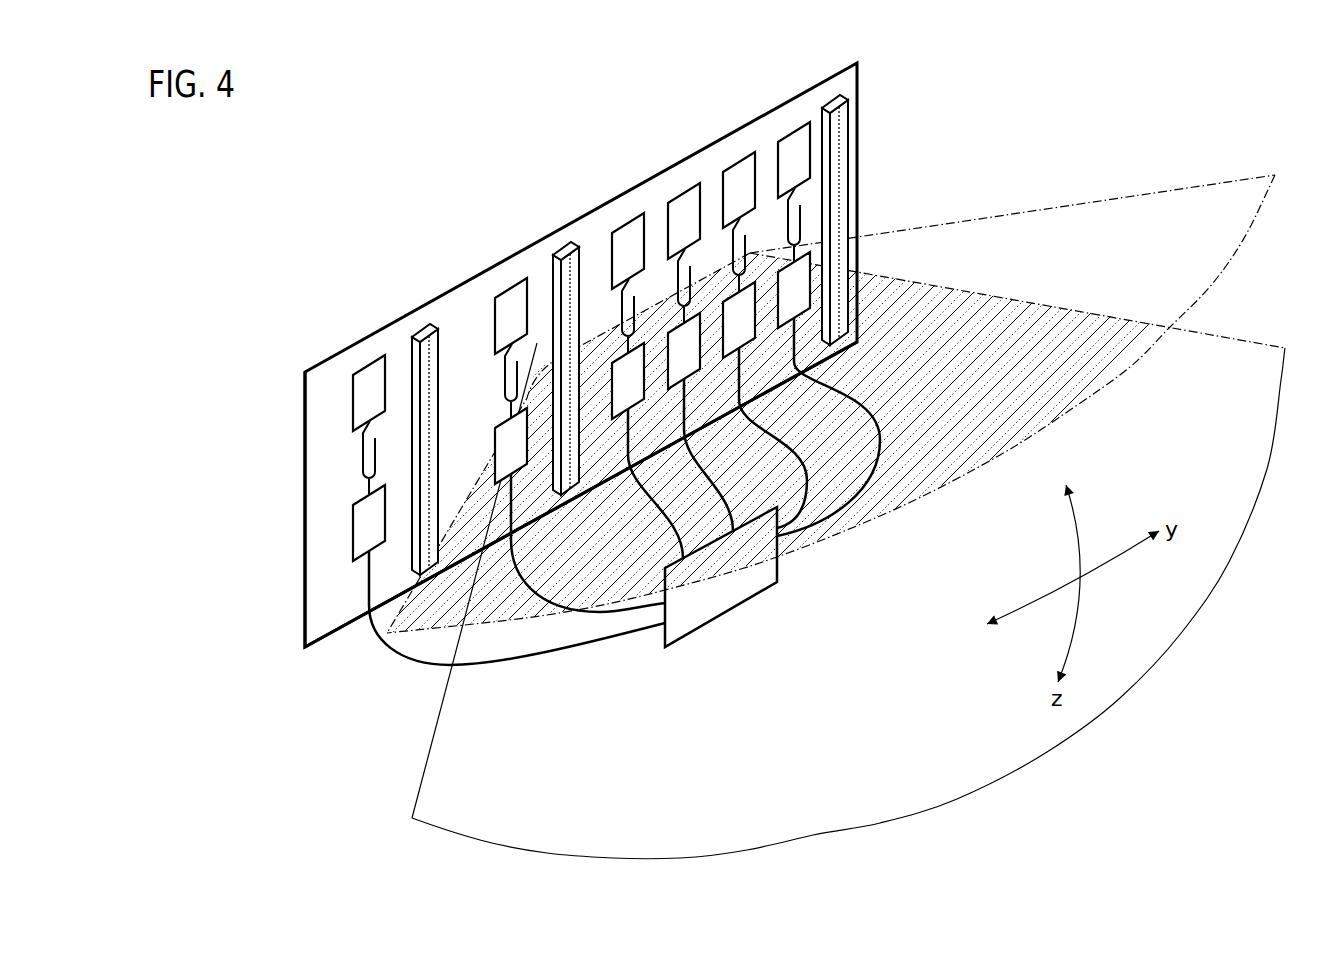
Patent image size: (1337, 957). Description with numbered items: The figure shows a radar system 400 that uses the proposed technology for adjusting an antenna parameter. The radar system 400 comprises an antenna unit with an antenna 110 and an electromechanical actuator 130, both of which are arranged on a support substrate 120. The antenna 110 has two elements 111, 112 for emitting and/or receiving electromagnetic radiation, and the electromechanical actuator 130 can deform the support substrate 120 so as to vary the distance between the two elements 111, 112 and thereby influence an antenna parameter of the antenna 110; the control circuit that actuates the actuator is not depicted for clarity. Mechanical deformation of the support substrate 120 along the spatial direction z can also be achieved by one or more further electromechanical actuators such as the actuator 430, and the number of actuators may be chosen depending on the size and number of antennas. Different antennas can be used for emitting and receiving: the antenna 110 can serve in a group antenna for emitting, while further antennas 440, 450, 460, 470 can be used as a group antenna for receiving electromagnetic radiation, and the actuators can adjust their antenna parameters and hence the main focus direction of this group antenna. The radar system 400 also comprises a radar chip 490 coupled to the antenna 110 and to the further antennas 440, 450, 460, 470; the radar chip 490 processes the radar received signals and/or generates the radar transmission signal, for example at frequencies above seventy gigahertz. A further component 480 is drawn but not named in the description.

The radar system 400 is at (283, 726).
The antenna 110 is at (317, 547).
The support substrate 120 is at (305, 605).
The element 111 is at (363, 410).
The element 112 is at (363, 520).
The electromechanical actuator 130 is at (425, 571).
The further electromechanical actuator 430 is at (562, 491).
The further antenna 440 is at (521, 495).
The further antenna 450 is at (690, 393).
The further antenna 460 is at (743, 362).
The further antenna 470 is at (808, 338).
The connector 480 is at (848, 176).
The radar chip 490 is at (720, 618).